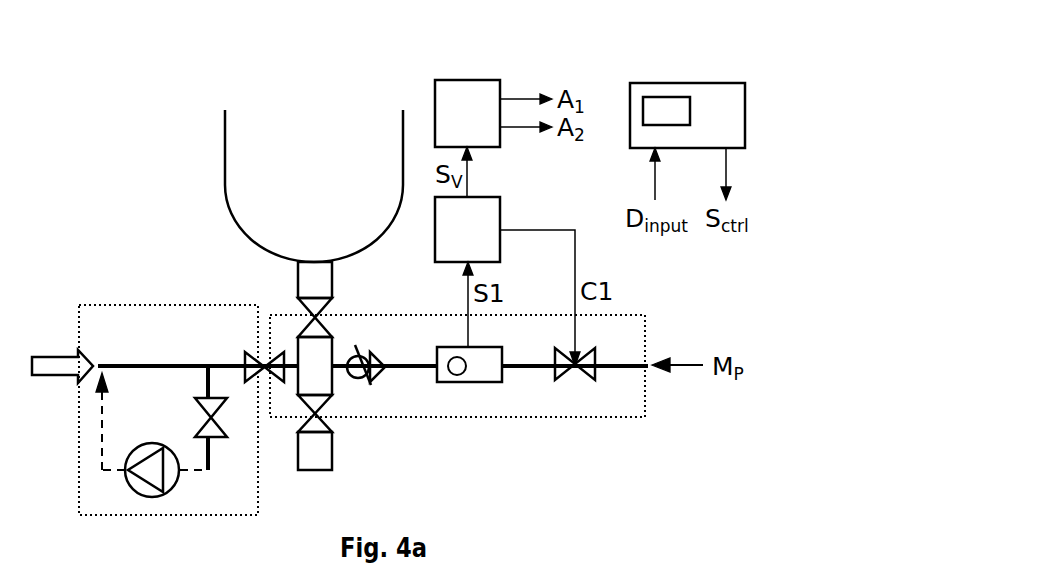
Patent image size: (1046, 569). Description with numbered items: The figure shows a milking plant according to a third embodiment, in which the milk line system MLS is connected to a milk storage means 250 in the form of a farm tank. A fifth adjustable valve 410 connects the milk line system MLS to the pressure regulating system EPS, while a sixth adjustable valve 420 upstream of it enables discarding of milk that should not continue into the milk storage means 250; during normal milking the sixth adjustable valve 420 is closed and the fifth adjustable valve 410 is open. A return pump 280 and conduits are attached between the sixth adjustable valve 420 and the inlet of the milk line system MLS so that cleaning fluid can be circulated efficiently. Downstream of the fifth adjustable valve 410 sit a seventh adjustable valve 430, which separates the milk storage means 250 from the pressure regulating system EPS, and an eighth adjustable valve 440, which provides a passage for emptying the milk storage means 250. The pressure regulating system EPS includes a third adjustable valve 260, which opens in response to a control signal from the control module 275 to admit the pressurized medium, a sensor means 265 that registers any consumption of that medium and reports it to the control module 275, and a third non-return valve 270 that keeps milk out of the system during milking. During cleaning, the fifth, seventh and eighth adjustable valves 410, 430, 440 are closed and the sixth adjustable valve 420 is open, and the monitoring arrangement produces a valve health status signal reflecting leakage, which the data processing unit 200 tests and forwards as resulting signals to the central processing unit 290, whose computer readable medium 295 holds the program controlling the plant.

The data processing unit 200 is at (468, 80).
The milk storage means 250 is at (225, 162).
The third adjustable valve means 260 is at (596, 381).
The sensor means 265 is at (447, 347).
The third non-return valve 270 is at (372, 385).
The control module 275 is at (515, 222).
The return pump 280 is at (175, 482).
The central processing unit 290 is at (687, 80).
The computer readable medium 295 is at (663, 97).
The fifth adjustable valve 410 is at (245, 358).
The sixth adjustable valve 420 is at (200, 422).
The seventh adjustable valve 430 is at (266, 300).
The eighth adjustable valve 440 is at (363, 431).
The milk line system MLS is at (172, 305).
The pressure regulating system EPS is at (457, 389).